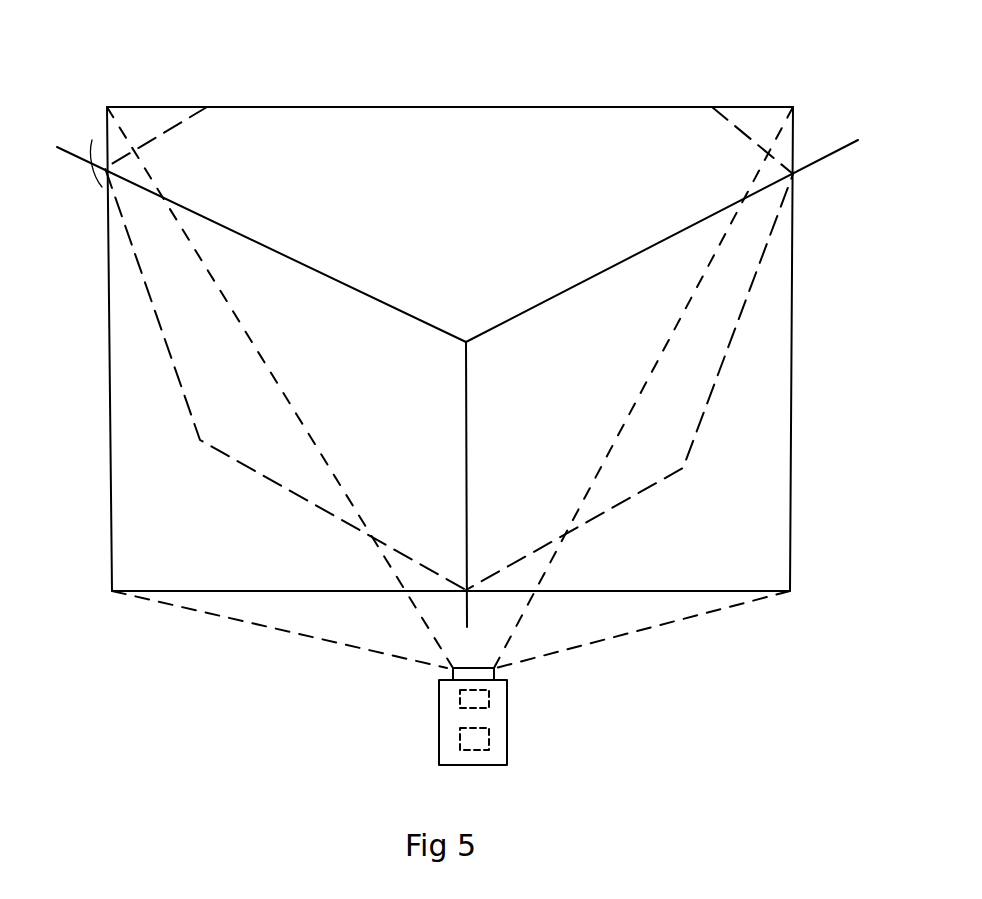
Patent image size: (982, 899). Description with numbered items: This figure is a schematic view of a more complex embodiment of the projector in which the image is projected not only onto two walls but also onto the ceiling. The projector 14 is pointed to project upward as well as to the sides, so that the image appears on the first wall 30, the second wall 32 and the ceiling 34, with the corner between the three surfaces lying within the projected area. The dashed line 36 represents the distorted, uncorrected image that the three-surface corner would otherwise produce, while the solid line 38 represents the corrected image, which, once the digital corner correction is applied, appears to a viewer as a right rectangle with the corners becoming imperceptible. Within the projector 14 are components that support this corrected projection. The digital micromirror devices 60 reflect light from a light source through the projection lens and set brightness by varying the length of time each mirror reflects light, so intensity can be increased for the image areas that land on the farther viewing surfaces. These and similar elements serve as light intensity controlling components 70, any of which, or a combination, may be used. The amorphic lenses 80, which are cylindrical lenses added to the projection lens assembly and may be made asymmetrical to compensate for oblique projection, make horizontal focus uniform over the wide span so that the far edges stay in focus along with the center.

The projector 14 is at (493, 726).
The first wall 30 is at (757, 522).
The second wall 32 is at (143, 498).
The ceiling 34 is at (472, 138).
The dashed line 36 is at (145, 286).
The solid line 38 is at (142, 108).
The digital micromirror devices 60 is at (460, 740).
The light intensity controlling components 70 is at (460, 697).
The amorphic lenses 80 is at (467, 677).